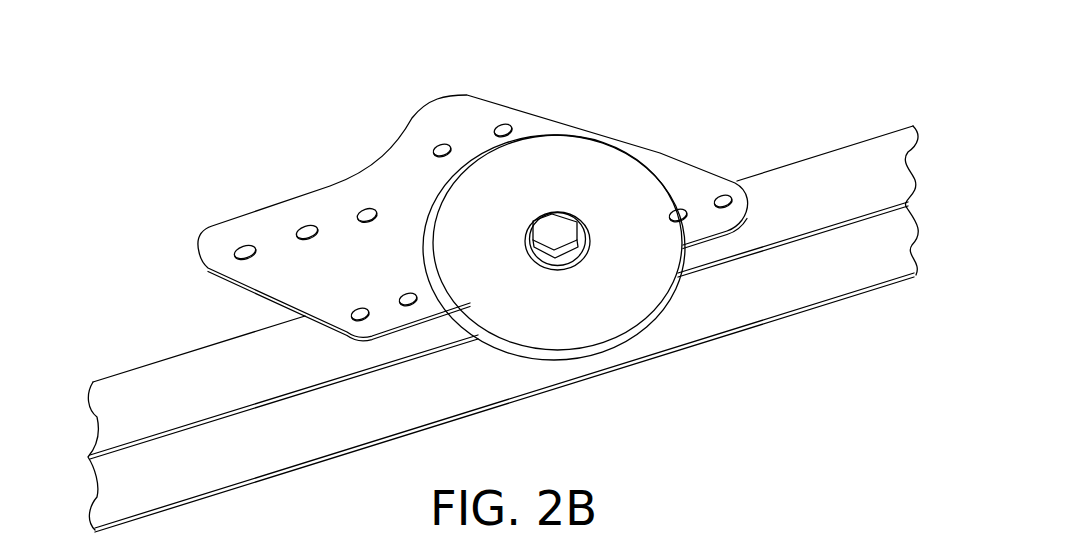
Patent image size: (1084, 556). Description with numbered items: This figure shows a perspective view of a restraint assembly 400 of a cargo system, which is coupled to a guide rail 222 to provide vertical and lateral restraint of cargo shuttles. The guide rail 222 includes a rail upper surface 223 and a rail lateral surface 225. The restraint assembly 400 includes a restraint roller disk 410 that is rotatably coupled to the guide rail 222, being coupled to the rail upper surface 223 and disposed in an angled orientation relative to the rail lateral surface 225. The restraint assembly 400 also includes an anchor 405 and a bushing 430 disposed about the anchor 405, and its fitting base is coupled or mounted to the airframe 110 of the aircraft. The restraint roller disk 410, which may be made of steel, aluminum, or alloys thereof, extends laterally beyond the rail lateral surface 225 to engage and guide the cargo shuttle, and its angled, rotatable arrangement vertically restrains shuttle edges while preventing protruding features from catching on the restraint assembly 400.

The airframe 110 is at (317, 209).
The guide rail 222 is at (514, 311).
The rail upper surface 223 is at (868, 203).
The rail lateral surface 225 is at (818, 281).
The restraint assembly 400 is at (559, 185).
The anchor 405 is at (552, 230).
The restraint roller disk 410 is at (523, 172).
The bushing 430 is at (583, 252).